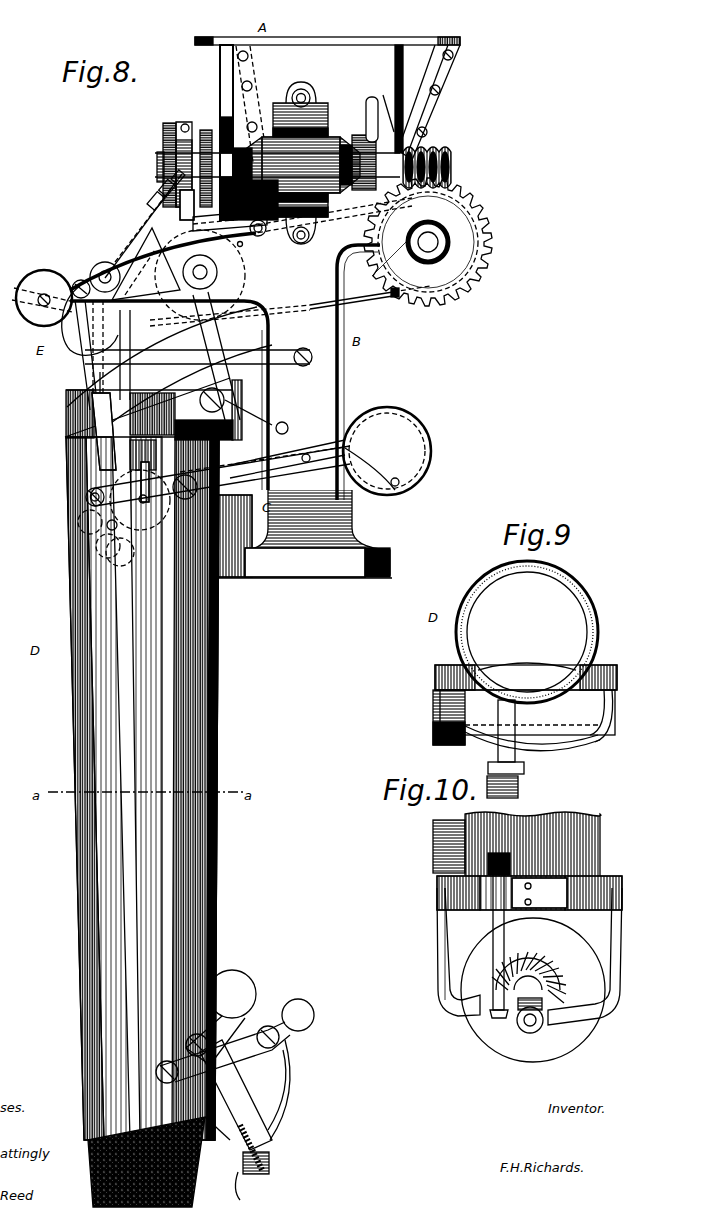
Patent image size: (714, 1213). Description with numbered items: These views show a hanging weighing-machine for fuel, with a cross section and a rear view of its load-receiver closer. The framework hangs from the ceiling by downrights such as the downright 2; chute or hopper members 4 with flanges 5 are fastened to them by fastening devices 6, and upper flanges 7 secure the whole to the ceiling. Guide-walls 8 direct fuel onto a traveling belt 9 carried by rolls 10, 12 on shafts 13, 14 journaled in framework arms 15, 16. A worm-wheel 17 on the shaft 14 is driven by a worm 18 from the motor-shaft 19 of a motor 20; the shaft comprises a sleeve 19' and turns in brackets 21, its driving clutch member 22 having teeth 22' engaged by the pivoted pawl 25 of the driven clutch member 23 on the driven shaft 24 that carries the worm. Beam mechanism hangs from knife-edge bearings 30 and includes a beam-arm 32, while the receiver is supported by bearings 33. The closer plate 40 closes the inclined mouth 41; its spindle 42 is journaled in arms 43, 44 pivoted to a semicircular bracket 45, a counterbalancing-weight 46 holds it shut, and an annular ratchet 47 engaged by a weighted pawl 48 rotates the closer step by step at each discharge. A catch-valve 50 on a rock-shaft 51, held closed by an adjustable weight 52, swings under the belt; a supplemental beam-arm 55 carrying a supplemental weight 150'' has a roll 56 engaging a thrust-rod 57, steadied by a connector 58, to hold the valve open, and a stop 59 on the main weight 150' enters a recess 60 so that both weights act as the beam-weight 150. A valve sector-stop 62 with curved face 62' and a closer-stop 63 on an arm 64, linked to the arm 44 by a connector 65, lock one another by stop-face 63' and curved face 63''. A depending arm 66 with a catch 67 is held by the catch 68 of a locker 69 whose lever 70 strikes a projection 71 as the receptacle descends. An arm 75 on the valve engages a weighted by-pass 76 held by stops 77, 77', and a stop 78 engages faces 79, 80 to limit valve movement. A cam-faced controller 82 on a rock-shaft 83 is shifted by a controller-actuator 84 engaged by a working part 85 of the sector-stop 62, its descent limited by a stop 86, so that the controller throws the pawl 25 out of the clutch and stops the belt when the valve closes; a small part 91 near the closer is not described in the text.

In FIG. 8, the downright 2 is at (345, 387).
In FIG. 8, the chute or hopper members 4 is at (272, 71).
In FIG. 8, the flanges 5 is at (240, 82).
In FIG. 8, the fastening devices 6 is at (238, 57).
In FIG. 8, the flanges 7 is at (340, 44).
In FIG. 8, the guide-walls 8 is at (140, 230).
In FIG. 8, the belt 9 is at (372, 297).
In FIG. 8, the roll 10 is at (244, 280).
In FIG. 8, the roll 12 is at (468, 232).
In FIG. 8, the shaft 13 is at (210, 272).
In FIG. 8, the shaft 14 is at (432, 243).
In FIG. 8, the arm 15 is at (205, 310).
In FIG. 8, the arm 16 is at (381, 262).
In FIG. 8, the worm-wheel 17 is at (480, 258).
In FIG. 8, the worm 18 is at (452, 160).
In FIG. 8, the motor-shaft 19 is at (277, 142).
In FIG. 8, the sleeve 19' is at (255, 200).
In FIG. 8, the motor 20 is at (330, 152).
In FIG. 8, the brackets or arms 21 is at (234, 128).
In FIG. 8, the driving clutch member 22 is at (208, 160).
In FIG. 8, the clutch teeth 22' is at (186, 151).
In FIG. 8, the driven clutch member 23 is at (163, 131).
In FIG. 8, the driven shaft 24 is at (157, 162).
In FIG. 8, the pivoted pawl 25 is at (199, 205).
In FIG. 8, the bearings 30 is at (218, 481).
In FIG. 8, the beam-arm 32 is at (292, 548).
In FIG. 8, the bearings 33 is at (140, 485).
In FIG. 8, the closer plate 40 is at (195, 1185).
In FIG. 9, the closer plate 40 is at (548, 745).
In FIG. 10, the closer plate 40 is at (533, 991).
In FIG. 8, the inclined mouth 41 is at (120, 1140).
In FIG. 9, the inclined mouth 41 is at (472, 624).
In FIG. 8, the spindle 42 is at (268, 1170).
In FIG. 10, the spindle 42 is at (530, 1034).
In FIG. 8, the closer-arm 43 is at (291, 1090).
In FIG. 9, the closer-arm 43 is at (616, 710).
In FIG. 10, the closer-arm 43 is at (612, 944).
In FIG. 8, the closer-arm 44 is at (230, 1092).
In FIG. 9, the closer-arm 44 is at (440, 706).
In FIG. 10, the closer-arm 44 is at (448, 953).
In FIG. 8, the semicircular bracket 45 is at (262, 1020).
In FIG. 9, the semicircular bracket 45 is at (600, 678).
In FIG. 10, the semicircular bracket 45 is at (600, 880).
In FIG. 8, the counterbalancing-weight 46 is at (250, 985).
In FIG. 9, the counterbalancing-weight 46 is at (433, 731).
In FIG. 10, the counterbalancing-weight 46 is at (433, 858).
In FIG. 10, the annular ratchet 47 is at (556, 980).
In FIG. 10, the pawl 48 is at (500, 946).
In FIG. 8, the catch-valve 50 is at (72, 345).
In FIG. 8, the rock-shaft 51 is at (96, 268).
In FIG. 8, the adjustable weight 52 is at (40, 272).
In FIG. 8, the supplemental beam-arm 55 is at (320, 478).
In FIG. 8, the roll 56 is at (86, 499).
In FIG. 8, the thrust-rod 57 is at (100, 458).
In FIG. 8, the connector 58 is at (228, 395).
In FIG. 8, the stop 59 is at (400, 481).
In FIG. 8, the recess 60 is at (405, 488).
In FIG. 8, the valve sector-stop 62 is at (168, 327).
In FIG. 8, the curved face 62' is at (163, 261).
In FIG. 8, the closer-stop 63 is at (198, 351).
In FIG. 8, the stop-face 63' is at (42, 435).
In FIG. 8, the curved face 63'' is at (116, 335).
In FIG. 8, the arm 64 is at (208, 410).
In FIG. 8, the connector 65 is at (180, 688).
In FIG. 8, the depending arm 66 is at (232, 415).
In FIG. 8, the catch 67 is at (288, 430).
In FIG. 8, the catch 68 is at (194, 487).
In FIG. 8, the locker 69 is at (282, 425).
In FIG. 8, the lever 70 is at (262, 459).
In FIG. 8, the projection 71 is at (307, 455).
In FIG. 8, the depending arm 75 is at (100, 374).
In FIG. 8, the weighted by-pass 76 is at (80, 527).
In FIG. 8, the stop 77 is at (79, 539).
In FIG. 8, the stop 77' is at (86, 560).
In FIG. 8, the stop 78 is at (146, 264).
In FIG. 8, the face 79 is at (96, 265).
In FIG. 8, the face 80 is at (142, 300).
In FIG. 8, the cam-faced controller 82 is at (302, 215).
In FIG. 8, the rock-shaft 83 is at (264, 238).
In FIG. 8, the controller-actuator 84 is at (165, 180).
In FIG. 8, the working part 85 is at (150, 203).
In FIG. 8, the stop 86 is at (241, 247).
In FIG. 8, the wire 91 is at (249, 1190).
In FIG. 8, the beam-weight 150 is at (387, 440).
In FIG. 8, the main weight 150' is at (446, 424).
In FIG. 8, the supplemental weight 150'' is at (454, 443).